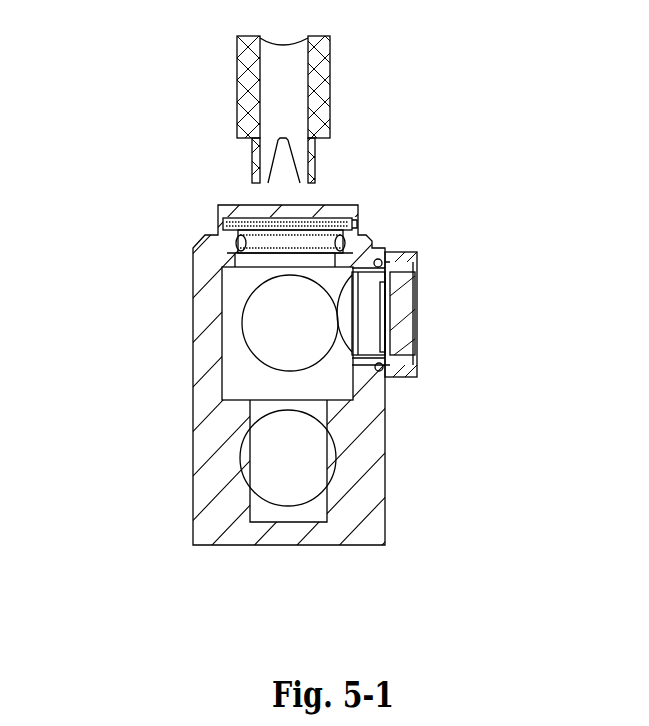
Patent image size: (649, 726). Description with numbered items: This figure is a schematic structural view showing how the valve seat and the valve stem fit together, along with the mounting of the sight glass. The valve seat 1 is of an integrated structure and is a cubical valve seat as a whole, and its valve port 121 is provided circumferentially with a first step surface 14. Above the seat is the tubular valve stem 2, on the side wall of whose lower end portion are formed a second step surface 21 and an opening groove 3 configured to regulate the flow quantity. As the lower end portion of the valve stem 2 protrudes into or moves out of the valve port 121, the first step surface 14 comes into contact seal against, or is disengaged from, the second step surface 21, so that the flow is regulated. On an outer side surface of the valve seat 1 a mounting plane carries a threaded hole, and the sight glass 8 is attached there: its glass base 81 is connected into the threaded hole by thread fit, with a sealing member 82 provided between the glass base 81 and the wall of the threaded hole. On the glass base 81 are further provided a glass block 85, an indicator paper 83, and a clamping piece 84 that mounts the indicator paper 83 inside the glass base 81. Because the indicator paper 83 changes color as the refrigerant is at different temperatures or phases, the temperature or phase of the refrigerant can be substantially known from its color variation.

The valve seat 1 is at (220, 337).
The first step surface 14 is at (233, 398).
The valve port 121 is at (258, 412).
The valve stem 2 is at (238, 77).
The second step surface 21 is at (250, 138).
The opening groove 3 is at (283, 163).
The sight glass 8 is at (492, 278).
The glass base 81 is at (398, 267).
The sealing member 82 is at (471, 259).
The indicator paper 83 is at (386, 340).
The clamping piece 84 is at (392, 358).
The glass block 85 is at (402, 316).